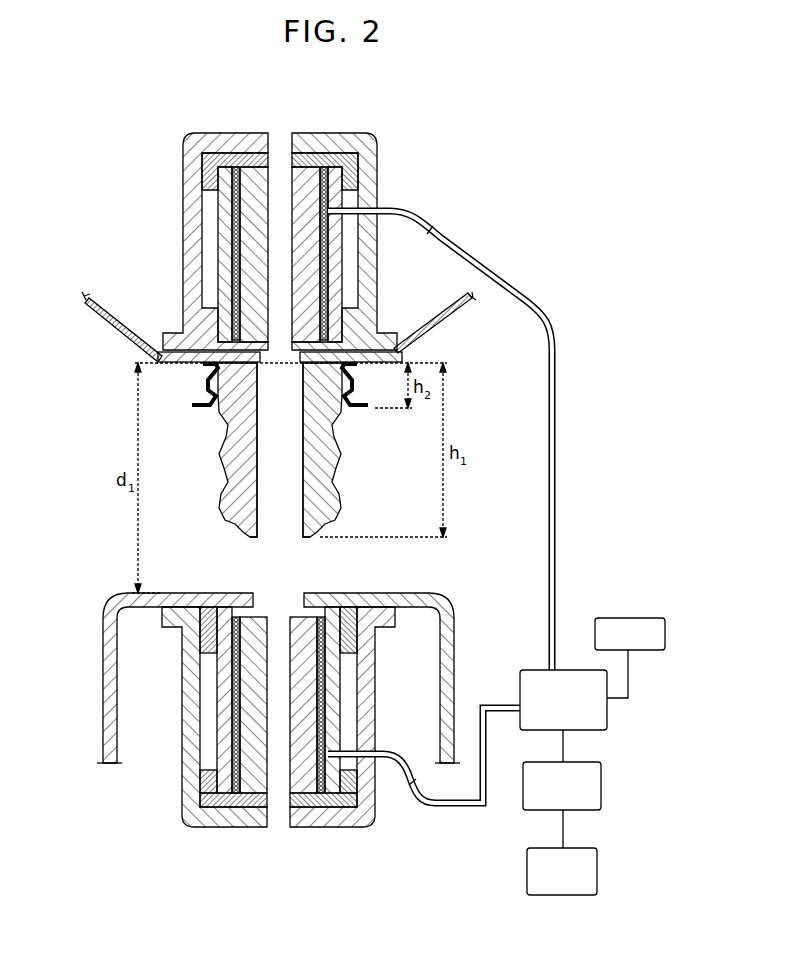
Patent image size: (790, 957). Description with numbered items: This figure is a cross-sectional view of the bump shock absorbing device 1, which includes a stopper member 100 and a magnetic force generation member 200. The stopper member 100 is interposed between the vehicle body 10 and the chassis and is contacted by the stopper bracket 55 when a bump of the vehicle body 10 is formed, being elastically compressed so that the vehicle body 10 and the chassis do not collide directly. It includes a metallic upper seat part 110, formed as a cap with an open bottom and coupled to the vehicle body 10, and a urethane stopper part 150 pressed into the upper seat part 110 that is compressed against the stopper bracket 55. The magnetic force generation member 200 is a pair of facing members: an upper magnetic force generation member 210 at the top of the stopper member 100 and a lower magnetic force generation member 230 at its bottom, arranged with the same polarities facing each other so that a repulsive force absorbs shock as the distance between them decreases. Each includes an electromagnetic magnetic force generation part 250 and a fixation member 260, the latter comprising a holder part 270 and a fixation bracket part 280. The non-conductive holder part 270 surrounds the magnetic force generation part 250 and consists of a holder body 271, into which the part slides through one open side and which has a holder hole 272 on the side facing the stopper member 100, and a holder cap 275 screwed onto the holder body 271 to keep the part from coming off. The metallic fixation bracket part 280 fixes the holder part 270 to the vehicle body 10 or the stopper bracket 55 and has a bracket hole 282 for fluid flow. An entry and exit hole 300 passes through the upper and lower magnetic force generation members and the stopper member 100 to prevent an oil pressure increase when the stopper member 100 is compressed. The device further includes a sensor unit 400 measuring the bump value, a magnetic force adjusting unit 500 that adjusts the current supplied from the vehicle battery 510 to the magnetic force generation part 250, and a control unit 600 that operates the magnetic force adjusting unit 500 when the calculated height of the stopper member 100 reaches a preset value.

The bump shock absorbing device 1 is at (582, 192).
The vehicle body 10 is at (462, 312).
The stopper bracket 55 is at (118, 611).
The stopper member 100 is at (97, 378).
The upper seat part 110 is at (208, 381).
The stopper part 150 is at (232, 432).
The magnetic force generation member 200 is at (503, 403).
The upper magnetic force generation member 210 is at (425, 313).
The lower magnetic force generation member 230 is at (421, 644).
The magnetic force generation part 250 is at (252, 740).
The fixation member 260 is at (440, 884).
The holder part 270 is at (470, 838).
The holder body 271 is at (337, 722).
The holder hole 272 is at (395, 607).
The holder cap 275 is at (320, 808).
The fixation bracket part 280 is at (208, 822).
The bracket hole 282 is at (268, 830).
The entry and exit hole 300 is at (270, 315).
The sensor unit 400 is at (597, 865).
The magnetic force adjusting unit 500 is at (607, 722).
The battery 510 is at (642, 616).
The control unit 600 is at (603, 778).